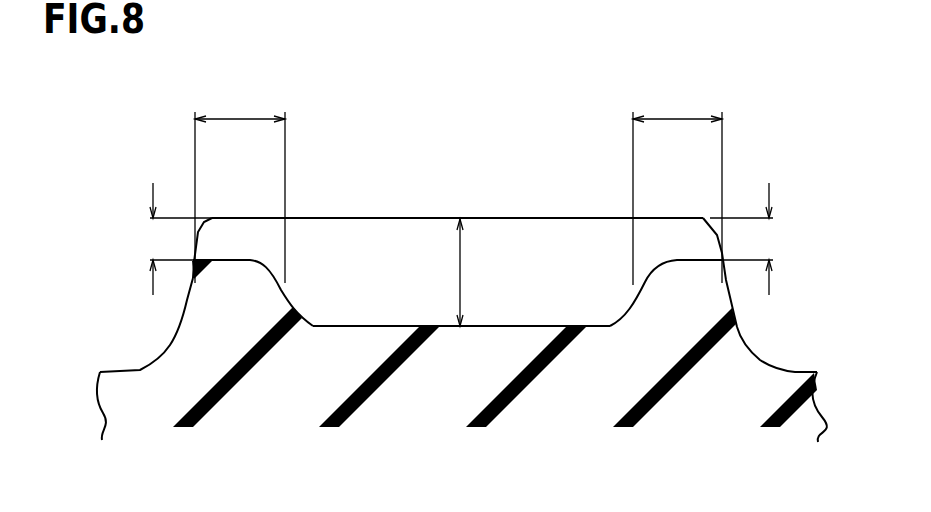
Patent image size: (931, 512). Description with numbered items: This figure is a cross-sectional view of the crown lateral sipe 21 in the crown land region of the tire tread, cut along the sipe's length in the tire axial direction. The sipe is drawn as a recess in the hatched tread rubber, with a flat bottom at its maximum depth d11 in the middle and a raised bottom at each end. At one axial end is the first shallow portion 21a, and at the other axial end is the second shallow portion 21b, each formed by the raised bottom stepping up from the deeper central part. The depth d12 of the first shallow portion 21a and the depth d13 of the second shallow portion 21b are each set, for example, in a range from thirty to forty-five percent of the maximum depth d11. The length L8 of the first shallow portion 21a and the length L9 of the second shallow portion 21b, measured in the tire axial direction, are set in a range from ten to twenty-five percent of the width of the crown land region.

The crown lateral sipe 21 is at (397, 273).
The first shallow portion 21a is at (232, 258).
The second shallow portion 21b is at (687, 258).
The maximum depth of the crown lateral sipe d11 is at (460, 273).
The depth of the first shallow portion d12 is at (152, 239).
The depth of the second shallow portion d13 is at (768, 239).
The length of the first shallow portion L8 is at (240, 184).
The length of the second shallow portion L9 is at (677, 185).